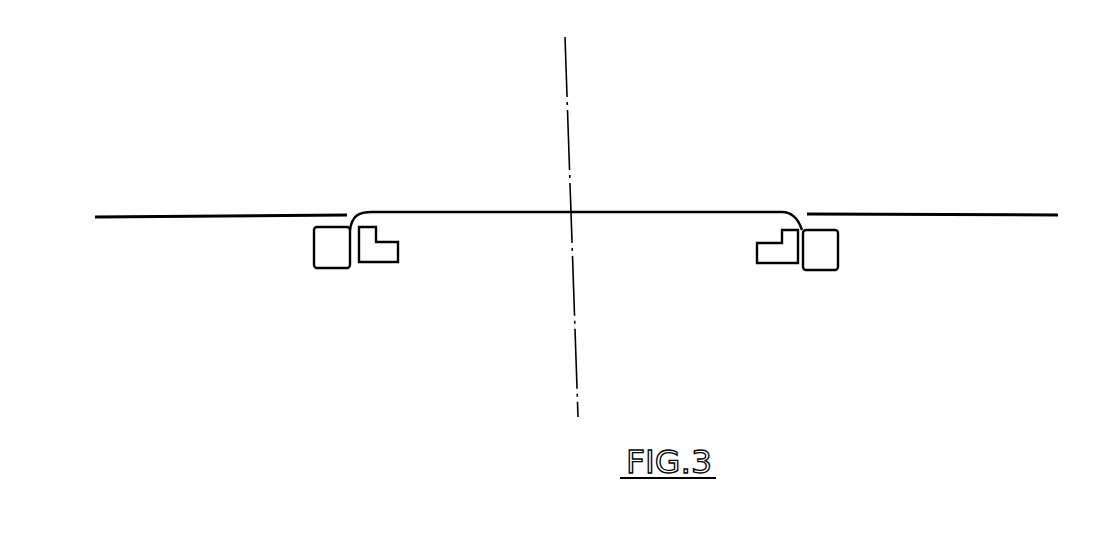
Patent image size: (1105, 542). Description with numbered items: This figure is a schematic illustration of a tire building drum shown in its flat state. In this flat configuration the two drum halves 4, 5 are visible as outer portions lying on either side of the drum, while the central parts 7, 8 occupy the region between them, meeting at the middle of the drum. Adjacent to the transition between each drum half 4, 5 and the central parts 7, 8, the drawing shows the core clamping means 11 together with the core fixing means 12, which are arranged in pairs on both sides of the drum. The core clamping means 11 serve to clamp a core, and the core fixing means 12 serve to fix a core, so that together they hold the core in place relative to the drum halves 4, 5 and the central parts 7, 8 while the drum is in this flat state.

The drum half 4 is at (203, 214).
The drum half 5 is at (917, 213).
The central part 7 is at (463, 212).
The central part 8 is at (673, 212).
The core clamping means 11 is at (320, 262).
The core fixing means 12 is at (380, 256).